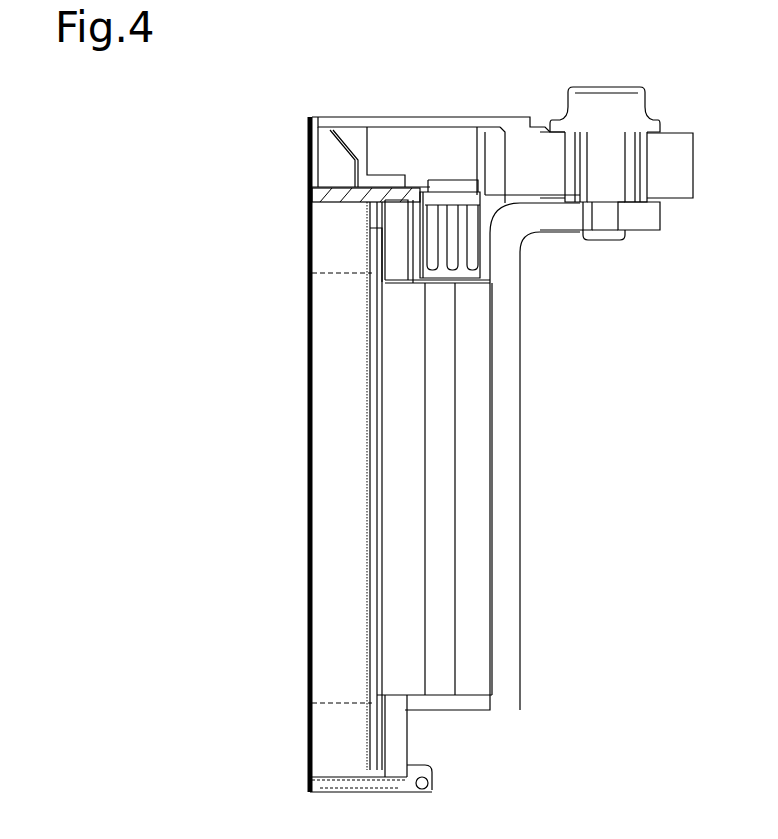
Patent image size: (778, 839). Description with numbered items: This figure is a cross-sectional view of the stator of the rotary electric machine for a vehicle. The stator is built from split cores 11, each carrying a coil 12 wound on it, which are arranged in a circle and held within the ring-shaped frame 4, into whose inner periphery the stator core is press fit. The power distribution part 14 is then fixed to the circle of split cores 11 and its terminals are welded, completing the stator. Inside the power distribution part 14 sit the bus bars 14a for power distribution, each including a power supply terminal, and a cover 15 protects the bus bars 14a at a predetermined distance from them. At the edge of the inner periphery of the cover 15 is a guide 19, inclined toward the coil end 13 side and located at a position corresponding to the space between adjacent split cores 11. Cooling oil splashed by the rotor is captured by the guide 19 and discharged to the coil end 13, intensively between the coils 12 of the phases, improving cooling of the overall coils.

The frame 4 is at (506, 612).
The split core 11 is at (445, 387).
The coil 12 is at (358, 462).
The coil end 13 is at (345, 238).
The power distribution part 14 is at (512, 170).
The bus bar 14a is at (430, 255).
The cover 15 is at (407, 123).
The guide 19 is at (333, 147).